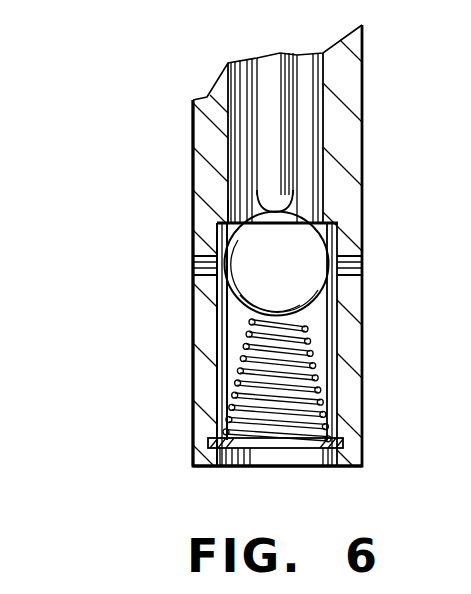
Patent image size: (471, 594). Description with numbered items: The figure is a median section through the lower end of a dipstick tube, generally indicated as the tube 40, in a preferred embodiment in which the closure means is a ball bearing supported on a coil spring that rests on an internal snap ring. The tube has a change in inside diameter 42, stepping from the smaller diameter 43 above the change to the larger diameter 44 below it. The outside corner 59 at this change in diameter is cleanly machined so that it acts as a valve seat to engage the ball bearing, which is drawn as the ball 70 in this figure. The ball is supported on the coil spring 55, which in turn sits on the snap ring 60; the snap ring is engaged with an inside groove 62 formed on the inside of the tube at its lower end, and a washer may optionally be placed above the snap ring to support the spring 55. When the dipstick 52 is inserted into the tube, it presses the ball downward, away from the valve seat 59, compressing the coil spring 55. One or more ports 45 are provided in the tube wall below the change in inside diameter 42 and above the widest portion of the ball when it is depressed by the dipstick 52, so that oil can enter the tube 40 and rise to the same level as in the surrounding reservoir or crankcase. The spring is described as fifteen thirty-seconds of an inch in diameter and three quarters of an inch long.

The tube 40 is at (183, 129).
The change in inside diameter 42 is at (338, 232).
The diameter above the change 43 is at (318, 106).
The diameter below the change 44 is at (330, 353).
The ports 45 is at (202, 267).
The dipstick 52 is at (268, 68).
The coil spring 55 is at (230, 383).
The outside corner 59 is at (227, 220).
The snap ring 60 is at (208, 442).
The inside groove 62 is at (335, 458).
The ball 70 is at (240, 288).